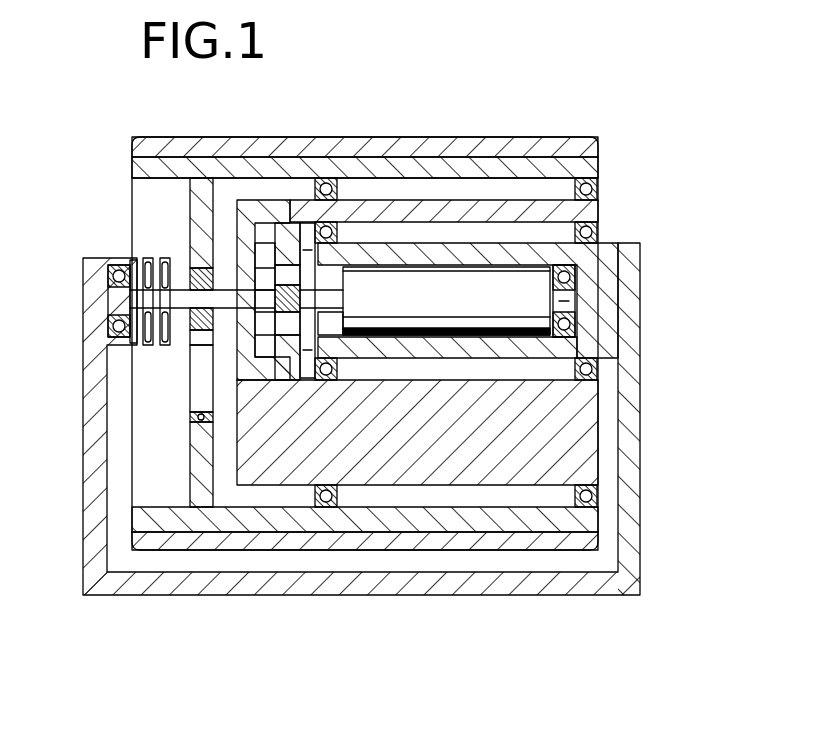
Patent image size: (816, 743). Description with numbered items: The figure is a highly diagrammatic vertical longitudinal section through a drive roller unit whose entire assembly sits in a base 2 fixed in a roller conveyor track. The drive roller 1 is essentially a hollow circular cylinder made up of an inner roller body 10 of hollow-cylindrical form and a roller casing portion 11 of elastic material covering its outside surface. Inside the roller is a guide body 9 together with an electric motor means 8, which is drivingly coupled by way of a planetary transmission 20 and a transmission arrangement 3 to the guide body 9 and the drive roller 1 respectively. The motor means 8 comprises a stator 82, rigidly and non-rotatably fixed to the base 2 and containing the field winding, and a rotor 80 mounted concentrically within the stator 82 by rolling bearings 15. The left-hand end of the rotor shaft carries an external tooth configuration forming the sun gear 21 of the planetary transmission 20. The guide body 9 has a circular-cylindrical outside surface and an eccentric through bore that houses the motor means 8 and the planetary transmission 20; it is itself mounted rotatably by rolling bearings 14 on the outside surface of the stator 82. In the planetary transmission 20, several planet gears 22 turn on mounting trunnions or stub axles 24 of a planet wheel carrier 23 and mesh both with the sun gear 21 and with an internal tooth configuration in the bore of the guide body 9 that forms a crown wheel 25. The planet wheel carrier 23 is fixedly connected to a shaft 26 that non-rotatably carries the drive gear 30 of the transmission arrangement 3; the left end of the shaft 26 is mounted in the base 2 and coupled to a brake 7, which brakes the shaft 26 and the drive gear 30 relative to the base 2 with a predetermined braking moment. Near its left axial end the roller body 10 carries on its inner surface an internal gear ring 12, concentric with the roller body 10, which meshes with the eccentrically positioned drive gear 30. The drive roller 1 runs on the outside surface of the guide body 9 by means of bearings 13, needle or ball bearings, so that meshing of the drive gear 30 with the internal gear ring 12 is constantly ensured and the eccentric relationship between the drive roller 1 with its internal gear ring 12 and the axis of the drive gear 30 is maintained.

The drive roller 1 is at (606, 150).
The base 2 is at (113, 582).
The transmission arrangement 3 is at (182, 272).
The brake 7 is at (138, 352).
The electric motor means 8 is at (614, 320).
The guide body 9 is at (542, 210).
The roller body 10 is at (455, 520).
The roller casing portion 11 is at (525, 540).
The internal gear ring 12 is at (187, 414).
The bearings 13 is at (327, 180).
The rolling bearings 14 is at (338, 232).
The rolling bearings 15 is at (622, 287).
The planetary transmission 20 is at (182, 254).
The sun gear 21 is at (343, 292).
The planet gears 22 is at (286, 232).
The planet wheel carrier 23 is at (246, 345).
The mounting trunnions or stub axles 24 is at (232, 243).
The crown wheel 25 is at (266, 245).
The shaft 26 is at (212, 345).
The drive gear 30 is at (186, 328).
The rotor 80 is at (496, 280).
The stator 82 is at (612, 350).